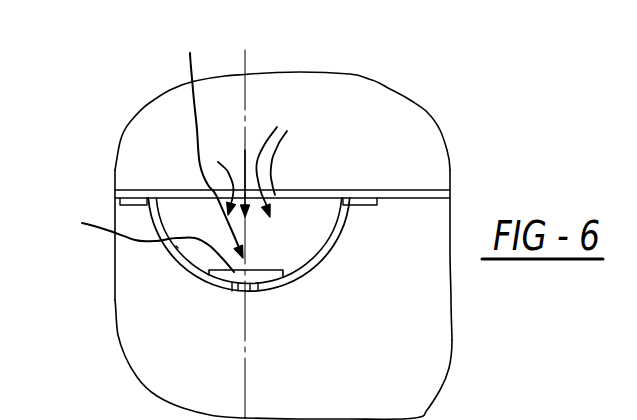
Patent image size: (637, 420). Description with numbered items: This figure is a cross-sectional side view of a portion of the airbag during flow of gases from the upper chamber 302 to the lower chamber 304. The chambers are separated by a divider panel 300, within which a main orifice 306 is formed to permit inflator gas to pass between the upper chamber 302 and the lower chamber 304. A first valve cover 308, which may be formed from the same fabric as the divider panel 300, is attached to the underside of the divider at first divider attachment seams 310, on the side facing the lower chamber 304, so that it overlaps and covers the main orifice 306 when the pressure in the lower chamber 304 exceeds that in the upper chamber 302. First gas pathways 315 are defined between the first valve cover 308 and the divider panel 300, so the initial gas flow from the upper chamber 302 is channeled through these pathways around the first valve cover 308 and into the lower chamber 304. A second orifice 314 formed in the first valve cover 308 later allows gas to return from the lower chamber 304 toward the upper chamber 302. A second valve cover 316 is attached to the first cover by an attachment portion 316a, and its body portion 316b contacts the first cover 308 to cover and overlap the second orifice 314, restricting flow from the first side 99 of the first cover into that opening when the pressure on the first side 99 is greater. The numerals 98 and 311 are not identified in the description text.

The divider panel 300 is at (413, 192).
The upper chamber 302 is at (400, 132).
The lower chamber 304 is at (415, 342).
The housing base wall 98 is at (152, 337).
The first divider attachment seams 310 is at (150, 190).
The first gas pathways 315 is at (172, 217).
The first valve cover 308 is at (335, 235).
The cup outer wall 311 is at (187, 263).
The first side 99 is at (176, 246).
The second valve cover 316 is at (206, 139).
The main orifice 306 is at (258, 156).
The body portion 316b is at (133, 236).
The attachment portion 316a is at (218, 283).
The second orifice 314 is at (253, 294).